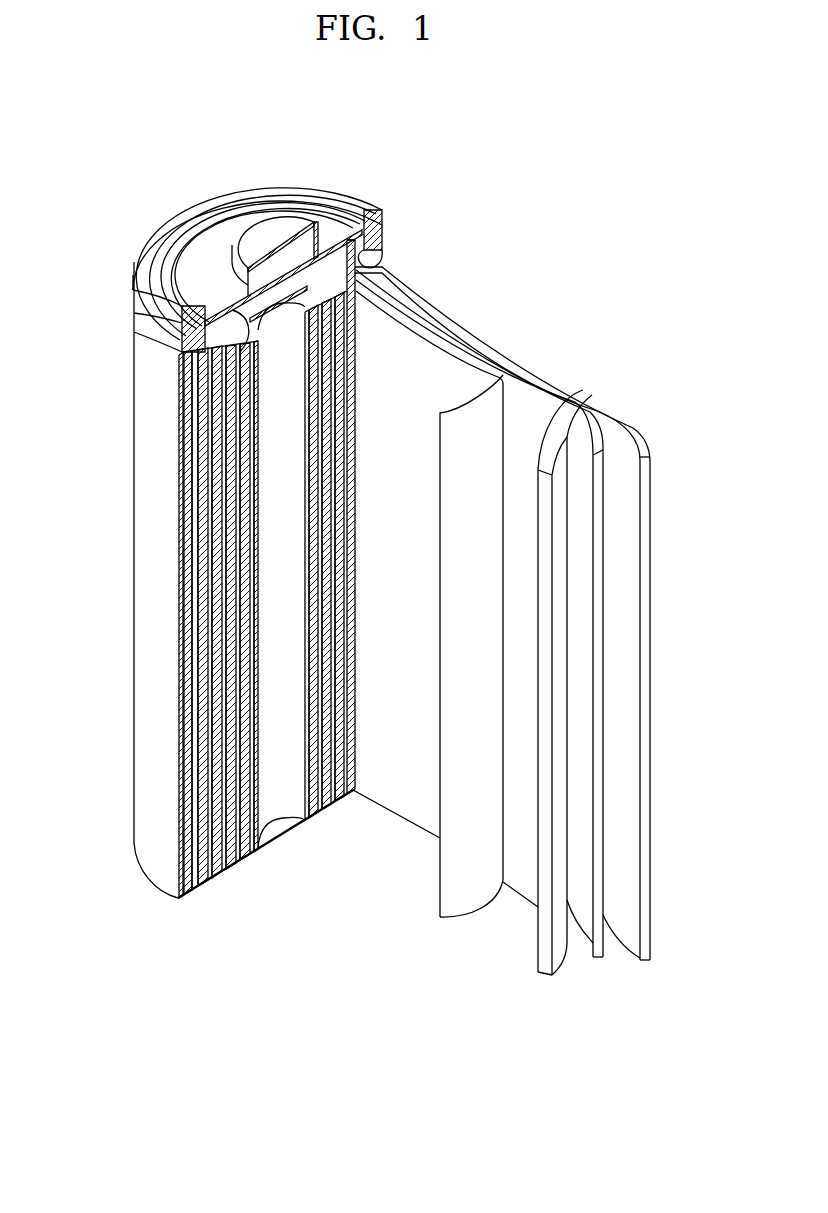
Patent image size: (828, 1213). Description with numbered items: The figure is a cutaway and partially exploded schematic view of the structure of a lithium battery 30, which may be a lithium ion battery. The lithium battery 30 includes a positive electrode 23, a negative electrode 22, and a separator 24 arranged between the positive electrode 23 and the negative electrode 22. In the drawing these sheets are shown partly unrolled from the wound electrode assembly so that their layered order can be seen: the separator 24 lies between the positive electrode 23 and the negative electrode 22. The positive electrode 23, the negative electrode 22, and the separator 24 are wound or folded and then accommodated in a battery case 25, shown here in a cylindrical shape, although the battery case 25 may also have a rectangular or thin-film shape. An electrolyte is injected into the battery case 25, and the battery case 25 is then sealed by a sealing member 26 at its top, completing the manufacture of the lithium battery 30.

The lithium battery 30 is at (352, 131).
The sealing member 26 is at (262, 226).
The battery case 25 is at (142, 530).
The separator 24 is at (450, 340).
The positive electrode 23 is at (530, 393).
The negative electrode 22 is at (641, 440).